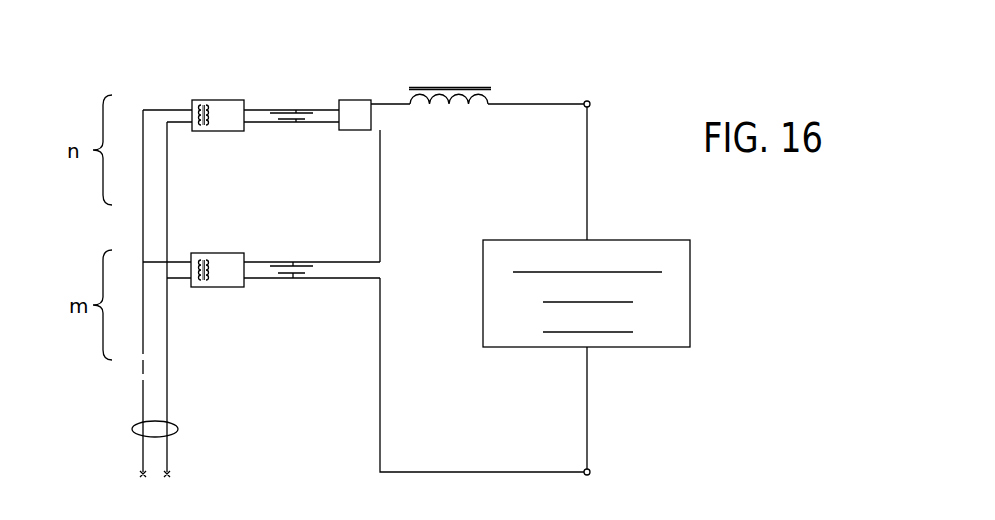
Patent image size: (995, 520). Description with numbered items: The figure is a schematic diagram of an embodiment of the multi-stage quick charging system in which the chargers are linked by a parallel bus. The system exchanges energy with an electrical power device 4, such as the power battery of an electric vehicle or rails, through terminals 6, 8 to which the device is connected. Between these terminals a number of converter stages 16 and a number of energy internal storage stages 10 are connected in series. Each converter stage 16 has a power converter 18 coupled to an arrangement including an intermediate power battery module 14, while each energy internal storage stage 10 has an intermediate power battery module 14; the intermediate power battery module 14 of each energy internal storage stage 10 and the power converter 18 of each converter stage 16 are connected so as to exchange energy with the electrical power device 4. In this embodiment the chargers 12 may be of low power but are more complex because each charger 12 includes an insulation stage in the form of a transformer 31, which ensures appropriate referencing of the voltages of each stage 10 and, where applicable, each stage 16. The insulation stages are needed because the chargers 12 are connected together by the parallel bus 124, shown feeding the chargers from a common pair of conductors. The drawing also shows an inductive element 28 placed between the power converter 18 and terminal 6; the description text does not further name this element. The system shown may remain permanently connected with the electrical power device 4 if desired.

The converter stage 16 is at (353, 84).
The charger 12 is at (217, 193).
The transformer 31 is at (203, 132).
The intermediate power battery module 14 is at (296, 124).
The power converter 18 is at (355, 115).
The inductor 28 is at (458, 88).
The terminal 6 is at (590, 101).
The electrical power device 4 is at (675, 345).
The terminal 8 is at (590, 475).
The energy internal storage stage 10 is at (267, 310).
The parallel bus 124 is at (176, 432).